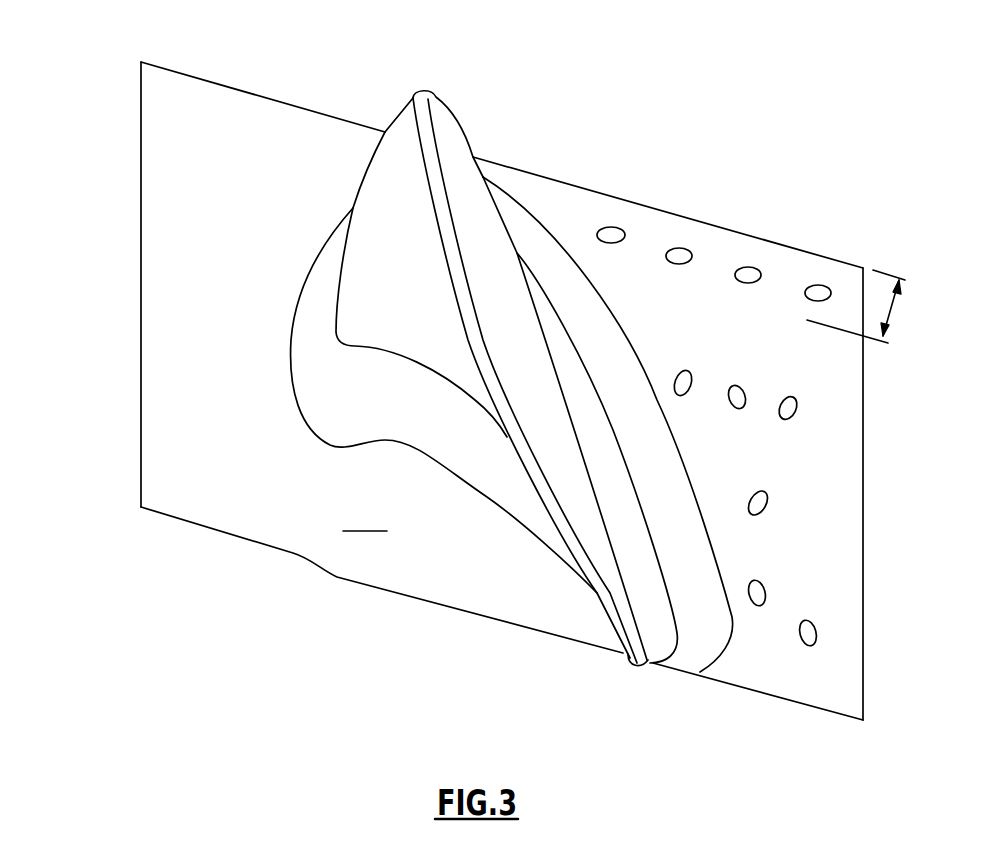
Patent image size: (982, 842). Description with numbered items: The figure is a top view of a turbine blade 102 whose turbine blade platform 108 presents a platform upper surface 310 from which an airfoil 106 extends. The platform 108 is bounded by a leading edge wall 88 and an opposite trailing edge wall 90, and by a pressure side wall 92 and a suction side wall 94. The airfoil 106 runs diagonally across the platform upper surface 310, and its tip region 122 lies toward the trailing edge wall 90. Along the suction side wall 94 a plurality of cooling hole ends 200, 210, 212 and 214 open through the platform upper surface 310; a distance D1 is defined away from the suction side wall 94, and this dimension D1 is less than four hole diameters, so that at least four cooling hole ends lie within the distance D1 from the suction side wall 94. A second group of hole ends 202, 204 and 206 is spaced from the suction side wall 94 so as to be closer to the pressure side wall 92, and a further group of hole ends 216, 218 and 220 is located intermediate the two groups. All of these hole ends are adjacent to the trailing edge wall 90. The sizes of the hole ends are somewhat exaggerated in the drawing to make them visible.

The turbine blade 102 is at (120, 74).
The leading edge wall 88 is at (140, 338).
The trailing edge wall 90 is at (863, 507).
The pressure side wall 92 is at (413, 597).
The suction side wall 94 is at (710, 223).
The airfoil 106 is at (467, 200).
The turbine blade platform 108 is at (208, 407).
The airfoil tip 122 is at (603, 638).
The platform upper surface 310 is at (365, 518).
The cooling hole end 200 is at (610, 227).
The hole end 202 is at (767, 497).
The hole end 204 is at (766, 591).
The hole end 206 is at (817, 632).
The cooling hole end 210 is at (680, 248).
The cooling hole end 212 is at (748, 267).
The cooling hole end 214 is at (818, 285).
The hole end 216 is at (688, 370).
The hole end 218 is at (735, 385).
The hole end 220 is at (792, 396).
The distance D1 is at (889, 312).